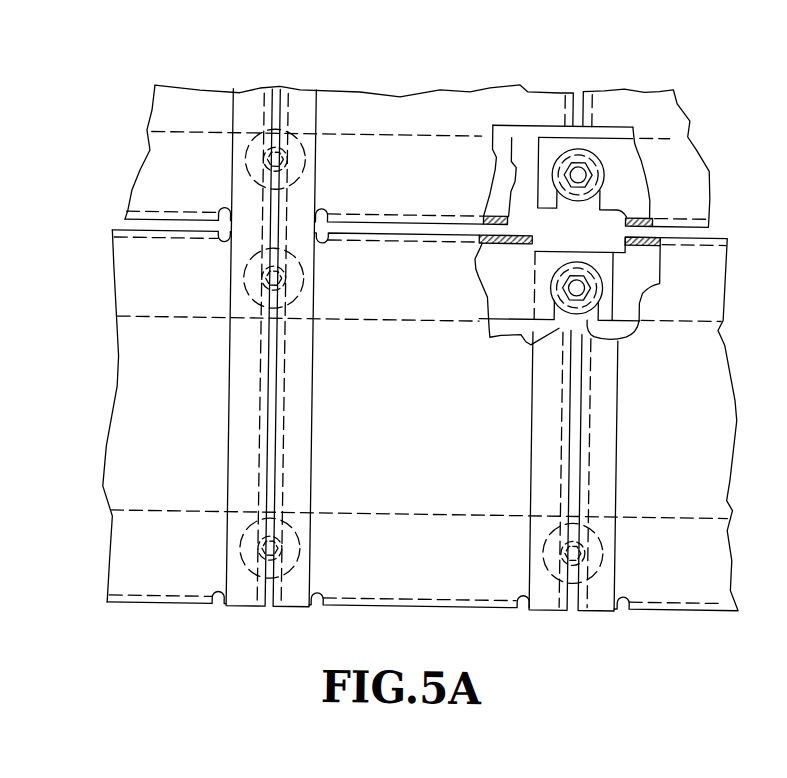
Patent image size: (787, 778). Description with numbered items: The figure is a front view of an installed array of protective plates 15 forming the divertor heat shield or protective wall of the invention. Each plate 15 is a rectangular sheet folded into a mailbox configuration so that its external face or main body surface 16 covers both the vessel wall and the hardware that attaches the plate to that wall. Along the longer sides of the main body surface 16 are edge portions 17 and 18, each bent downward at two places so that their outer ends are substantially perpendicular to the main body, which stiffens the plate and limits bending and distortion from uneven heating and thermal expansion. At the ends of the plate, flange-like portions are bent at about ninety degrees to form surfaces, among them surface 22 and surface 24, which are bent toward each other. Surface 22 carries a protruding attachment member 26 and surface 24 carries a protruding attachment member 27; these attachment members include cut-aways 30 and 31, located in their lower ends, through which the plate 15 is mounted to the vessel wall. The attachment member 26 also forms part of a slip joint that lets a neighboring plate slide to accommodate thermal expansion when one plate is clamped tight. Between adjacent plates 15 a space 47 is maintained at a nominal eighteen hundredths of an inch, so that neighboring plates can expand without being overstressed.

The plate 15 is at (105, 397).
The main body surface 16 is at (428, 428).
The edge portion 17 is at (289, 480).
The edge portion 18 is at (561, 421).
The surface 22 is at (505, 275).
The surface 24 is at (636, 205).
The attachment member 26 is at (597, 259).
The attachment member 27 is at (617, 170).
The cut-away 30 is at (617, 342).
The cut-away 31 is at (547, 215).
The space 47 is at (576, 598).